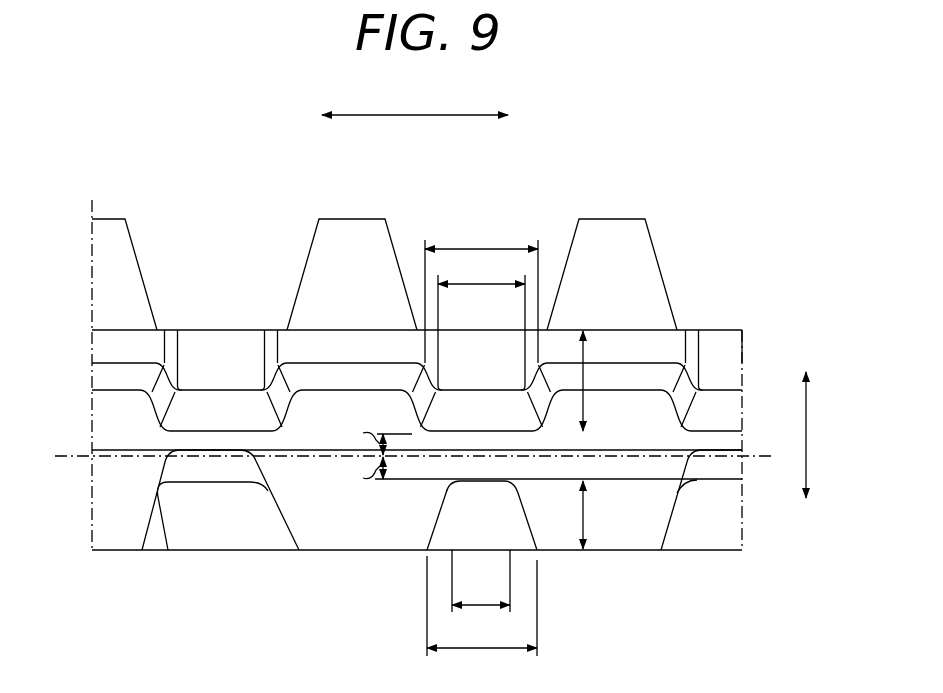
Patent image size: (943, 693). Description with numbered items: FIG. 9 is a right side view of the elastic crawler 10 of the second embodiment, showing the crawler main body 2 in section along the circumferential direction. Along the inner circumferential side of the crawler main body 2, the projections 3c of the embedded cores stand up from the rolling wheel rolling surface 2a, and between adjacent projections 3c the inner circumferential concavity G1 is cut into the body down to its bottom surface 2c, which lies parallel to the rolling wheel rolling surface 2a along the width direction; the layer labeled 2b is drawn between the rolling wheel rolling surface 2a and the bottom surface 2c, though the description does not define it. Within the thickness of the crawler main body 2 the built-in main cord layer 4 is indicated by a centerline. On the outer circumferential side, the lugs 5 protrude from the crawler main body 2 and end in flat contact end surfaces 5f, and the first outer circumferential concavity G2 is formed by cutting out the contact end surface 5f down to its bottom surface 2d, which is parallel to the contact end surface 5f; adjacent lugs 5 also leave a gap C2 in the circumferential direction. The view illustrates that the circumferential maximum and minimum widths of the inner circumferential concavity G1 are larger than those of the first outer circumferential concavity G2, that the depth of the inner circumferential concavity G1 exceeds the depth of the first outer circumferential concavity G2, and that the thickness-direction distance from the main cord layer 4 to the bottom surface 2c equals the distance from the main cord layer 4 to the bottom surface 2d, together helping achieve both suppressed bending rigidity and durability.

The elastic crawler 10 is at (705, 195).
The crawler main body 2 is at (718, 327).
The rolling wheel rolling surface 2a is at (603, 329).
The intermediate rubber layer 2b is at (122, 372).
The bottom surface of the inner circumferential concavity 2c is at (212, 417).
The bottom surface of the outer circumferential concavity 2d is at (477, 483).
The projection 3c is at (106, 238).
The main cord layer 4 is at (760, 457).
The lug 5 is at (116, 527).
The contact end surface 5f is at (388, 552).
The inner circumferential concavity G1 is at (216, 372).
The first outer circumferential concavity G2 is at (497, 535).
The gap C2 is at (216, 514).